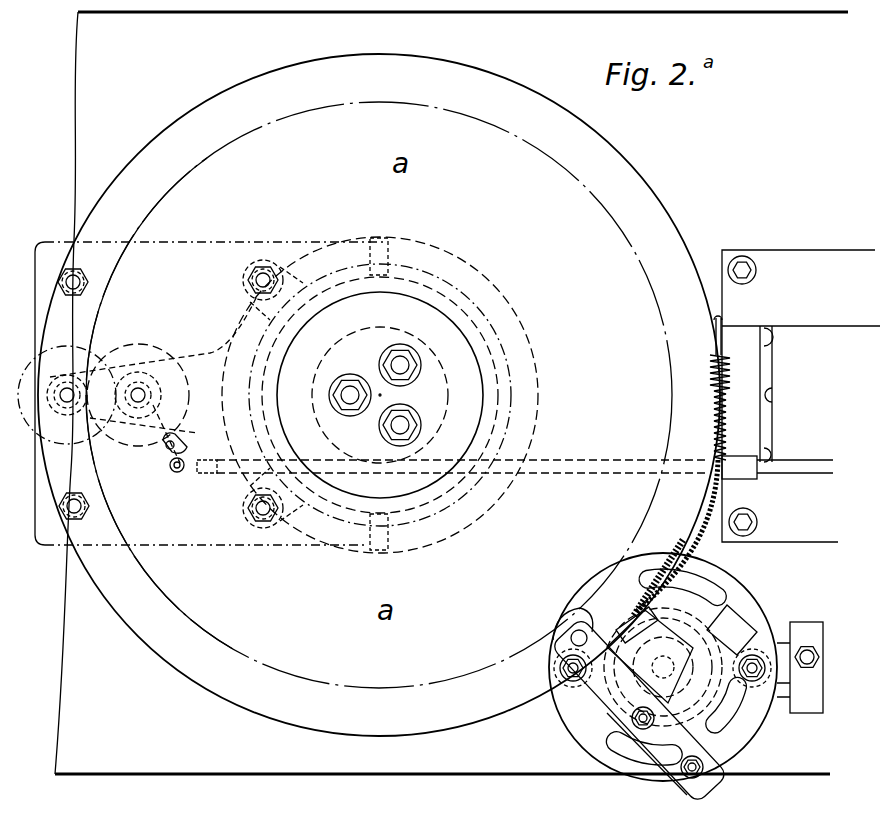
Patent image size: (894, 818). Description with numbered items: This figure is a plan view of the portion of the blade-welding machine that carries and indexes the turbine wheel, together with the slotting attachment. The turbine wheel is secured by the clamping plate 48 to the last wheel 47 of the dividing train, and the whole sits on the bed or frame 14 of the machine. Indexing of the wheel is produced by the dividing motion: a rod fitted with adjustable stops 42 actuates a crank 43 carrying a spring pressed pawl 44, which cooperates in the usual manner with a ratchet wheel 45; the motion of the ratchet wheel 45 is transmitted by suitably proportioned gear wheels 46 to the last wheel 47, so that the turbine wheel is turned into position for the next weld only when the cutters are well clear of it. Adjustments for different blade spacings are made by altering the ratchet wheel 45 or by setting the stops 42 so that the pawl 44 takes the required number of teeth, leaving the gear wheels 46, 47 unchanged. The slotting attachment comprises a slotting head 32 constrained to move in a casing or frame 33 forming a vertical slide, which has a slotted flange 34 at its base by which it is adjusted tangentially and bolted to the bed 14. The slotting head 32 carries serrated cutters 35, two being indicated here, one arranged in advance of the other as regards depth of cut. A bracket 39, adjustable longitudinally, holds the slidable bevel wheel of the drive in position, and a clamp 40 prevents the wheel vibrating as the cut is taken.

The bed or frame 14 is at (451, 393).
The slotting head 32 is at (690, 695).
The casing or frame 33 is at (700, 680).
The slotted flange 34 is at (657, 667).
The serrated cutters 35 is at (660, 551).
The bracket 39 is at (803, 632).
The clamp 40 is at (560, 633).
The adjustable stops 42 is at (737, 468).
The crank 43 is at (170, 468).
The spring pressed pawl 44 is at (193, 443).
The ratchet wheel 45 is at (160, 363).
The gear wheels 46 is at (73, 430).
The last wheel of the train 47 is at (176, 604).
The clamping plate 48 is at (380, 395).